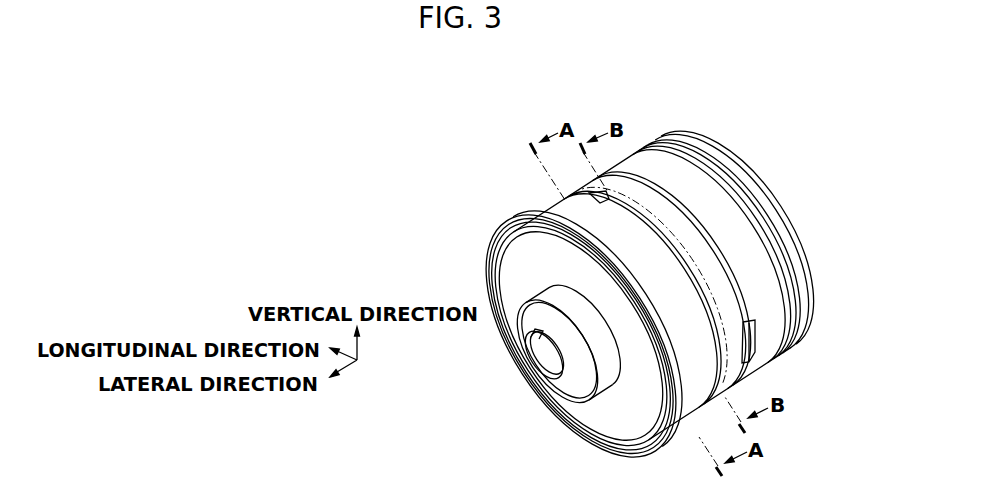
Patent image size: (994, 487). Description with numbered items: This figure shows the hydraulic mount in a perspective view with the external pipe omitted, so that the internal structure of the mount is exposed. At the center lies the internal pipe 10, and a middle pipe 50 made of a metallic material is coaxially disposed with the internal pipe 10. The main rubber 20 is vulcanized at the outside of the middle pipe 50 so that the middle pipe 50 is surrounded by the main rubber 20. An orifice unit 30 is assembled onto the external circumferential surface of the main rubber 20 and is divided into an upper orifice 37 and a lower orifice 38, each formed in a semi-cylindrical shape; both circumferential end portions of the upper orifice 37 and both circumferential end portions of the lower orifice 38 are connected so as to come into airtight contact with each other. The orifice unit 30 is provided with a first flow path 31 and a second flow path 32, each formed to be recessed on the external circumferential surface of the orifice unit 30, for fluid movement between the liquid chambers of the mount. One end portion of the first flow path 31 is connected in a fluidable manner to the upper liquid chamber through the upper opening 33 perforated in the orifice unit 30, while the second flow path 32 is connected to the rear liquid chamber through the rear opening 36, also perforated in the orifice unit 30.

The internal pipe 10 is at (540, 383).
The main rubber 20 is at (595, 415).
The orifice unit 30 is at (870, 291).
The first flow path 31 is at (703, 287).
The second flow path 32 is at (697, 228).
The upper opening 33 is at (680, 150).
The rear opening 36 is at (773, 370).
The upper orifice 37 is at (763, 298).
The lower orifice 38 is at (767, 343).
The middle pipe 50 is at (503, 243).